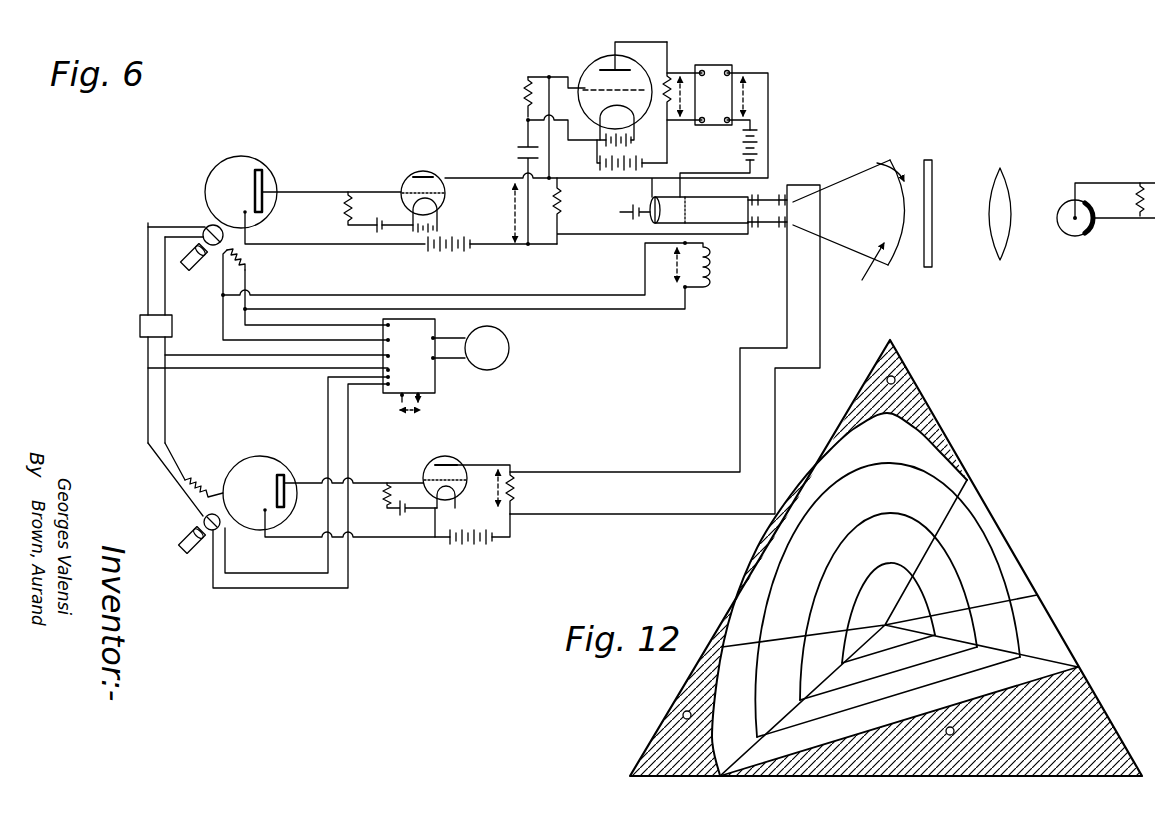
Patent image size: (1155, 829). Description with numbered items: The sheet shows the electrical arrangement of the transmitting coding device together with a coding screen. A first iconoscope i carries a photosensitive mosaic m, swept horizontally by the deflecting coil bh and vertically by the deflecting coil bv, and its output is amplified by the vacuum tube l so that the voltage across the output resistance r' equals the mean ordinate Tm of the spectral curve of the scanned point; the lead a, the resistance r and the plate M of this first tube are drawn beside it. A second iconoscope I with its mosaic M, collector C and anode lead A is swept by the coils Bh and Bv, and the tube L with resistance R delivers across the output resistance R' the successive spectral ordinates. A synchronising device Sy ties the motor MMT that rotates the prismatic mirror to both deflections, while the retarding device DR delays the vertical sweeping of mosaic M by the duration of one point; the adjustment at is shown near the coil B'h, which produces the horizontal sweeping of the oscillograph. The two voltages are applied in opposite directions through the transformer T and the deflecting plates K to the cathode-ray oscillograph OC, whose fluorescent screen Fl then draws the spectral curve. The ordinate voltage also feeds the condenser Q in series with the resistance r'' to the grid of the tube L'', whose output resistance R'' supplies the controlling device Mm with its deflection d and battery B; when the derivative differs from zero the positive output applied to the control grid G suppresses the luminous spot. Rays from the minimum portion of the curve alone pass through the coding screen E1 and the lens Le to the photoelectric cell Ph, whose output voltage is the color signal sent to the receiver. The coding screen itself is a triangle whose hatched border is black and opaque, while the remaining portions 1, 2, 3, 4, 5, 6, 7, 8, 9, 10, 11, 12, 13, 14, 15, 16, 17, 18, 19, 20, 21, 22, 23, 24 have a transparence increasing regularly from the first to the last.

In FIG. 12, the transparent portion No. 1 is at (900, 706).
In FIG. 12, the transparent portion No. 2 is at (897, 686).
In FIG. 12, the transparent portion No. 3 is at (892, 666).
In FIG. 12, the transparent portion No. 4 is at (883, 643).
In FIG. 12, the transparent portion No. 5 is at (855, 641).
In FIG. 12, the transparent portion No. 6 is at (818, 656).
In FIG. 12, the transparent portion No. 7 is at (773, 673).
In FIG. 12, the transparent portion No. 8 is at (730, 691).
In FIG. 12, the transparent portion No. 9 is at (818, 494).
In FIG. 12, the transparent portion No. 10 is at (837, 531).
In FIG. 12, the transparent portion No. 11 is at (856, 566).
In FIG. 12, the transparent portion No. 12 is at (874, 601).
In FIG. 12, the transparent portion No. 13 is at (909, 608).
In FIG. 12, the transparent portion No. 14 is at (931, 589).
In FIG. 12, the transparent portion No. 15 is at (956, 566).
In FIG. 12, the transparent portion No. 16 is at (985, 536).
In FIG. 12, the transparent portion No. 17 is at (1028, 621).
In FIG. 12, the transparent portion No. 18 is at (987, 621).
In FIG. 12, the transparent portion No. 19 is at (951, 623).
In FIG. 12, the transparent portion No. 20 is at (920, 623).
In FIG. 12, the transparent portion No. 21 is at (910, 639).
In FIG. 12, the transparent portion No. 22 is at (962, 638).
In FIG. 12, the transparent portion No. 23 is at (1001, 646).
In FIG. 12, the transparent portion No. 24 is at (1042, 651).
In FIG. 6, the second iconoscope I is at (241, 182).
In FIG. 6, the photosensitive mosaic M is at (251, 187).
In FIG. 6, the collector C is at (331, 184).
In FIG. 6, the anode lead A is at (326, 220).
In FIG. 6, the vertical deflecting coil Bv is at (185, 226).
In FIG. 6, the electric voltage T is at (198, 257).
In FIG. 6, the horizontal deflecting coil Bh is at (305, 293).
In FIG. 6, the horizontal sweeping coil of the oscillograph B'h is at (713, 265).
In FIG. 6, the adjustment at is at (664, 265).
In FIG. 6, the retarding device DR is at (156, 326).
In FIG. 6, the synchronising device Sy is at (409, 360).
In FIG. 6, the electric motor MMT is at (472, 348).
In FIG. 6, the resistor R is at (369, 212).
In FIG. 6, the amplifying vacuum tube L is at (423, 189).
In FIG. 6, the condenser Q is at (517, 182).
In FIG. 6, the resistance r'' is at (550, 126).
In FIG. 6, the output resistance of tube L R' is at (650, 211).
In FIG. 6, the three electrode vacuum tube L'' is at (622, 102).
In FIG. 6, the output resistance of tube L'' R'' is at (658, 102).
In FIG. 6, the controlling device Mm is at (699, 95).
In FIG. 6, the deflection d is at (675, 97).
In FIG. 6, the battery B is at (721, 137).
In FIG. 6, the control grid G is at (684, 202).
In FIG. 6, the deflecting plates K is at (772, 211).
In FIG. 6, the cathode-ray oscillograph OC is at (849, 231).
In FIG. 6, the fluorescent screen Fl is at (876, 161).
In FIG. 6, the coding screen E1 is at (919, 231).
In FIG. 6, the lens Le is at (995, 227).
In FIG. 6, the photoelectric cell Ph is at (1105, 225).
In FIG. 6, the horizontal deflecting coil bh is at (185, 479).
In FIG. 6, the first iconoscope i is at (260, 484).
In FIG. 6, the photosensitive mosaic m is at (278, 486).
In FIG. 6, the most absorbed radiation point a is at (351, 522).
In FIG. 6, the vertical deflecting coil bv is at (211, 538).
In FIG. 6, the resistor r is at (403, 499).
In FIG. 6, the amplifying vacuum tube l is at (445, 485).
In FIG. 6, the output resistance of tube l r' is at (493, 489).
In FIG. 6, the mean ordinate voltage Tm is at (487, 488).